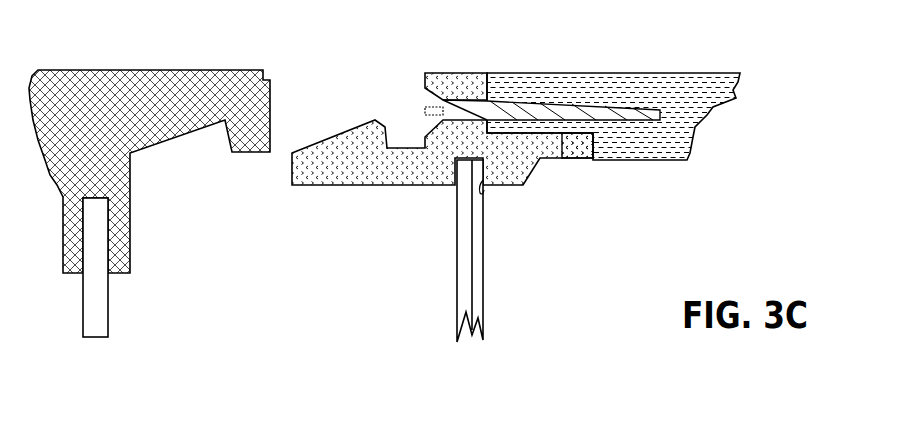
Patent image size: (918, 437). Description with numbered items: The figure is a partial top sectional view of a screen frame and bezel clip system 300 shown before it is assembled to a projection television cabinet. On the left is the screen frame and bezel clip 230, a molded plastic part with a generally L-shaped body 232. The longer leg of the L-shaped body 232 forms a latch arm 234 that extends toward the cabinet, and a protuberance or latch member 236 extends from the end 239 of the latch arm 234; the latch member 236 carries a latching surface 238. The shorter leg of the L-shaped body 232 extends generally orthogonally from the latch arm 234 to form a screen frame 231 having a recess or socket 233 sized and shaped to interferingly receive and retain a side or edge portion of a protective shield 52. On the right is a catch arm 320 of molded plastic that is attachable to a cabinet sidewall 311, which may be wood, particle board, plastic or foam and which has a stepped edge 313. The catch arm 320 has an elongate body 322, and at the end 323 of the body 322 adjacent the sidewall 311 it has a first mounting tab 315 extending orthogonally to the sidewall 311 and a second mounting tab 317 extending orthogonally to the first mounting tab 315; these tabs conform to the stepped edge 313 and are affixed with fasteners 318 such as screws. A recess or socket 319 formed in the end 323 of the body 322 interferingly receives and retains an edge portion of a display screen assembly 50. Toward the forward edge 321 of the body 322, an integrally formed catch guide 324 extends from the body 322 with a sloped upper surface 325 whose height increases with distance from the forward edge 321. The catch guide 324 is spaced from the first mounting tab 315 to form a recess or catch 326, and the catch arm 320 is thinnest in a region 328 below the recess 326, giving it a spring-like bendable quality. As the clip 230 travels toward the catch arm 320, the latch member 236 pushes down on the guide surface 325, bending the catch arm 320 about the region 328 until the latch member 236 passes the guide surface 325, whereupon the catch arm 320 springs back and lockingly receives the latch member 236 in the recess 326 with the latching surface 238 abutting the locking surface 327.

The display screen assembly 50 is at (487, 286).
The protective shield 52 is at (111, 305).
The screen frame and bezel clip 230 is at (189, 188).
The screen frame 231 is at (62, 218).
The L-shaped body 232 is at (48, 70).
The recess or socket 233 is at (100, 258).
The latch arm 234 is at (197, 70).
The latch member 236 is at (241, 153).
The latching surface 238 is at (228, 135).
The end of the latch arm 239 is at (271, 105).
The screen frame and bezel clip system 300 is at (650, 277).
The cabinet sidewall 311 is at (627, 73).
The stepped edge 313 is at (558, 160).
The first mounting tab 315 is at (470, 73).
The second mounting tab 317 is at (578, 160).
The fasteners 318 is at (425, 96).
The recess or socket 319 is at (485, 190).
The catch arm 320 is at (357, 236).
The forward edge 321 is at (290, 182).
The elongate body 322 is at (442, 187).
The end of the body 323 is at (523, 187).
The catch guide 324 is at (348, 128).
The upper surface 325 is at (315, 142).
The recess or catch 326 is at (405, 126).
The locking surface 327 is at (385, 127).
The region 328 is at (398, 173).